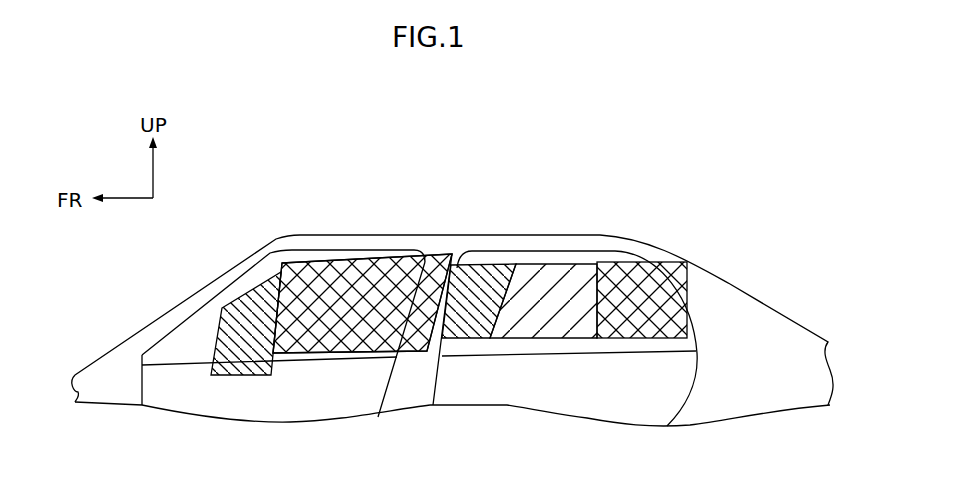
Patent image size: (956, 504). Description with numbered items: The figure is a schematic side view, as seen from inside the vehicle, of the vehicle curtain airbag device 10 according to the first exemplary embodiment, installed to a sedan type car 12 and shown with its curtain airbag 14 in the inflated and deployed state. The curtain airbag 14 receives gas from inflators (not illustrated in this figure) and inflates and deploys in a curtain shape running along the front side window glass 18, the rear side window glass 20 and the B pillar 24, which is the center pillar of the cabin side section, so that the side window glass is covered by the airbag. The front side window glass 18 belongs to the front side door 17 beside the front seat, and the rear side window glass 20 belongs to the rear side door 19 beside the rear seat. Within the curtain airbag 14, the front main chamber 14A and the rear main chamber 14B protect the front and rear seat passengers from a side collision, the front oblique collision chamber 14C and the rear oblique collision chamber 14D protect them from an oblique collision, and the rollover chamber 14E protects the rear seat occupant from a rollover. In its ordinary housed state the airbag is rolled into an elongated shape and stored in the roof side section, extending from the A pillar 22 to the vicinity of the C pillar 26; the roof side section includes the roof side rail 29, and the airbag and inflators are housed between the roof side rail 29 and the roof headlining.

The vehicle curtain airbag device 10 is at (447, 239).
The sedan type car 12 is at (808, 289).
The curtain airbag 14 is at (402, 255).
The front main chamber 14A is at (325, 263).
The rear main chamber 14B is at (628, 262).
The front oblique collision chamber 14C is at (243, 293).
The rear oblique collision chamber 14D is at (493, 263).
The rollover chamber 14E is at (573, 263).
The front side door 17 is at (283, 406).
The front side window glass 18 is at (182, 355).
The rear side door 19 is at (600, 404).
The rear side window glass 20 is at (518, 343).
The A pillar 22 is at (182, 302).
The B pillar 24 is at (405, 399).
The C pillar 26 is at (720, 273).
The roof side rail 29 is at (532, 235).